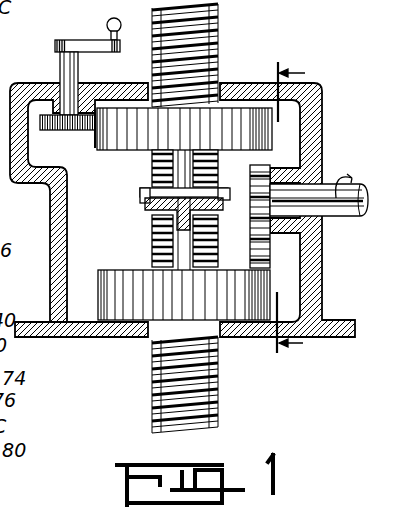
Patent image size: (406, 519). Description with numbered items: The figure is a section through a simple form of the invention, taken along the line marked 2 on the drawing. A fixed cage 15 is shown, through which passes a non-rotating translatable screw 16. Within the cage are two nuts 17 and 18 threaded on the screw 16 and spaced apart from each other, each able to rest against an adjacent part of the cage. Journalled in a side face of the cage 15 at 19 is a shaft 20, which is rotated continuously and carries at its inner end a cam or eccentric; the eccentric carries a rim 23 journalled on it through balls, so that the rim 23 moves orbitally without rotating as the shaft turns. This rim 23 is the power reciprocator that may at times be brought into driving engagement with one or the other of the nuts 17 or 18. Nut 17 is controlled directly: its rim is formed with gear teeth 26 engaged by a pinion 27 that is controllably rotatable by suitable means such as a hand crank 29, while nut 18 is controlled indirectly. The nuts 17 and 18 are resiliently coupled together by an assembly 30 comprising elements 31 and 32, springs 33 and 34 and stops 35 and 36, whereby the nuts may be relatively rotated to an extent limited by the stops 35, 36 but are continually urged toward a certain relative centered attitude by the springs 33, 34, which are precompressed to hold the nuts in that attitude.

The section line 2- 2 is at (298, 211).
The fixed cage 15 is at (322, 309).
The non-rotating translatable screw 16 is at (219, 403).
The nut 17 is at (272, 134).
The nut 18 is at (269, 282).
The journal in side face of cage 19 is at (327, 163).
The shaft 20 is at (332, 216).
The rim 23 is at (270, 256).
The gear teeth 26 is at (97, 147).
The pinion 27 is at (40, 132).
The hand crank 29 is at (107, 27).
The assembly 30 is at (140, 205).
The element 31 is at (143, 208).
The element 32 is at (218, 252).
The spring 33 is at (153, 246).
The spring 34 is at (217, 213).
The stop 35 is at (141, 183).
The stop 36 is at (228, 176).